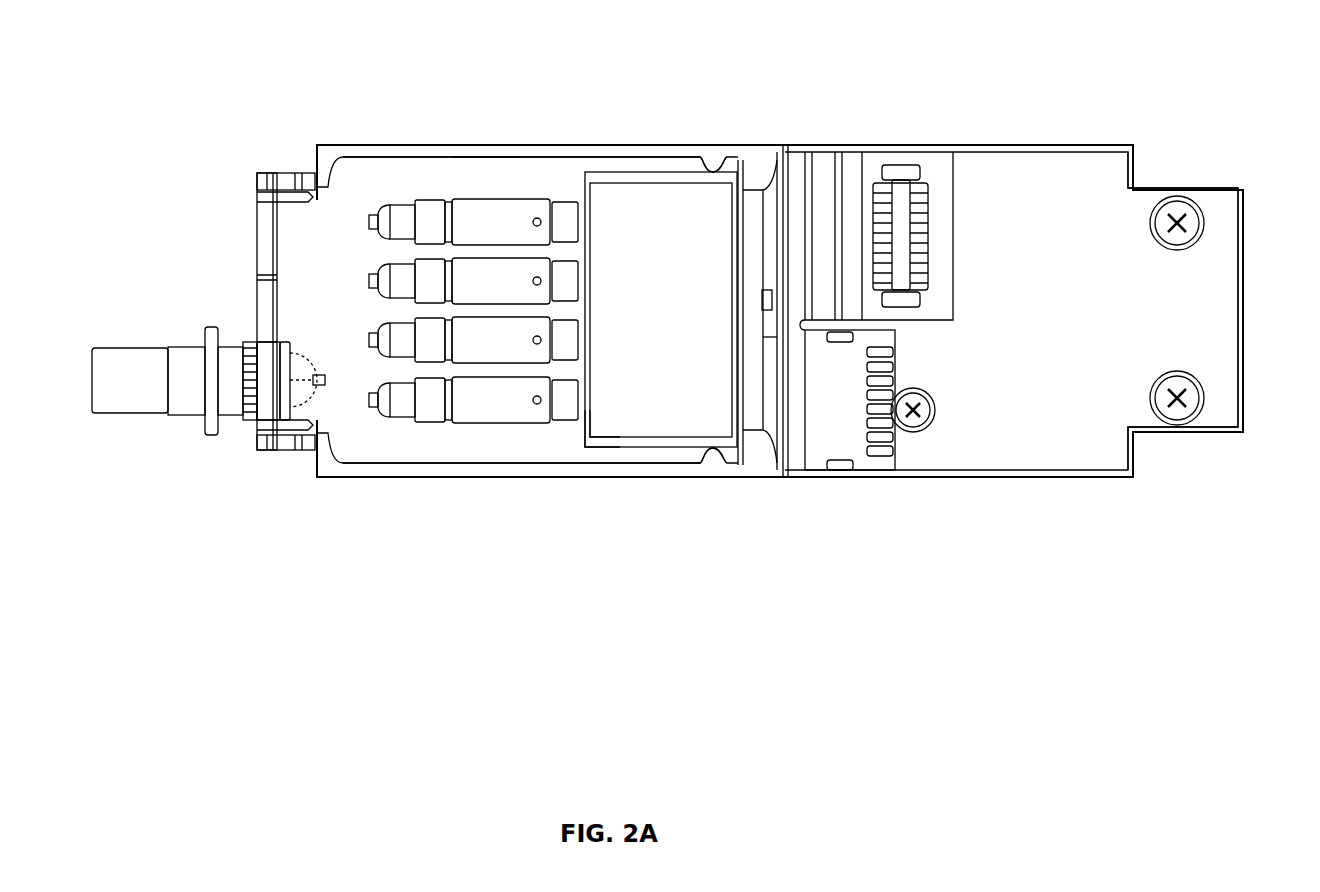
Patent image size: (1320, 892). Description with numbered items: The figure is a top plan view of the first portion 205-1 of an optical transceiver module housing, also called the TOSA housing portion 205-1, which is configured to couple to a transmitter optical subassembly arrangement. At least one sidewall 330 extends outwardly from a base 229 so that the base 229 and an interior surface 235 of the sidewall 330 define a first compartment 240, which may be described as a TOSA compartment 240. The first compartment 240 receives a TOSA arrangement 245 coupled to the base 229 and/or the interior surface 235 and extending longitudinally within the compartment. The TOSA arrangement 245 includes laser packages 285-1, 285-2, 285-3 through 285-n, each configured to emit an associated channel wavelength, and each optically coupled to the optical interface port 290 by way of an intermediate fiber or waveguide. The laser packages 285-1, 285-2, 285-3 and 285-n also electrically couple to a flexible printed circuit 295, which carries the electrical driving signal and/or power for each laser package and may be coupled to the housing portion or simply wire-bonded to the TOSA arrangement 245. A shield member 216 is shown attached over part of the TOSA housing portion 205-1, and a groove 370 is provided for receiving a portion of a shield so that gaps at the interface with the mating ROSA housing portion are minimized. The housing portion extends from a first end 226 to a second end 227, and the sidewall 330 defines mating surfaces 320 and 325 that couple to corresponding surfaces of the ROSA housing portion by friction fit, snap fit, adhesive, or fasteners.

The TOSA housing portion 205-1 is at (234, 73).
The first compartment 240 is at (377, 197).
The TOSA arrangement 245 is at (486, 178).
The groove 370 is at (710, 135).
The first end 226 is at (244, 190).
The second end 227 is at (1257, 182).
The optical interface port 290 is at (180, 352).
The base 229 is at (303, 311).
The shield member 216 is at (661, 309).
The laser package 285-n is at (473, 222).
The laser package 285-3 is at (473, 281).
The laser package 285-2 is at (473, 340).
The laser package 285-1 is at (473, 400).
The interior surface 235 is at (594, 430).
The mating surface 320 is at (322, 487).
The sidewall 330 is at (422, 484).
The mating surface 325 is at (560, 485).
The flexible printed circuit 295 is at (840, 427).